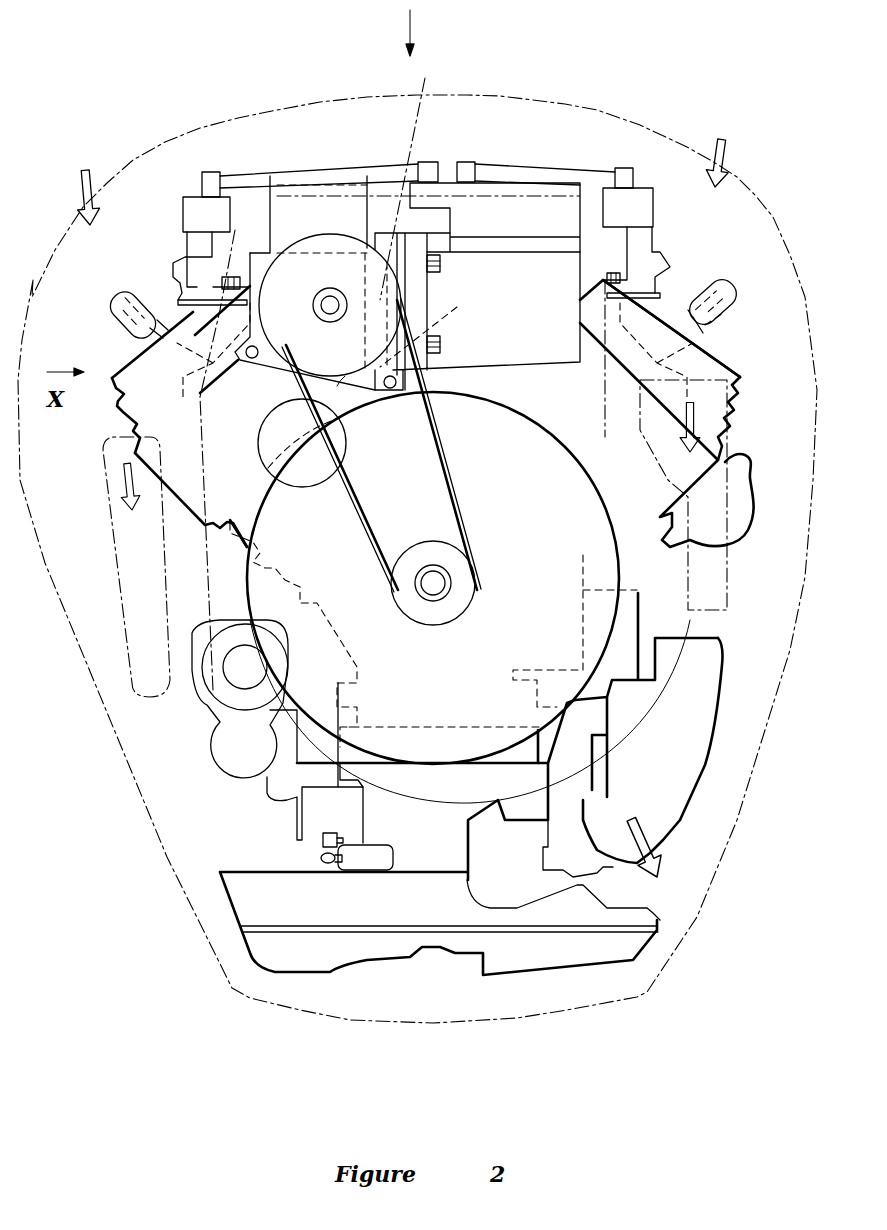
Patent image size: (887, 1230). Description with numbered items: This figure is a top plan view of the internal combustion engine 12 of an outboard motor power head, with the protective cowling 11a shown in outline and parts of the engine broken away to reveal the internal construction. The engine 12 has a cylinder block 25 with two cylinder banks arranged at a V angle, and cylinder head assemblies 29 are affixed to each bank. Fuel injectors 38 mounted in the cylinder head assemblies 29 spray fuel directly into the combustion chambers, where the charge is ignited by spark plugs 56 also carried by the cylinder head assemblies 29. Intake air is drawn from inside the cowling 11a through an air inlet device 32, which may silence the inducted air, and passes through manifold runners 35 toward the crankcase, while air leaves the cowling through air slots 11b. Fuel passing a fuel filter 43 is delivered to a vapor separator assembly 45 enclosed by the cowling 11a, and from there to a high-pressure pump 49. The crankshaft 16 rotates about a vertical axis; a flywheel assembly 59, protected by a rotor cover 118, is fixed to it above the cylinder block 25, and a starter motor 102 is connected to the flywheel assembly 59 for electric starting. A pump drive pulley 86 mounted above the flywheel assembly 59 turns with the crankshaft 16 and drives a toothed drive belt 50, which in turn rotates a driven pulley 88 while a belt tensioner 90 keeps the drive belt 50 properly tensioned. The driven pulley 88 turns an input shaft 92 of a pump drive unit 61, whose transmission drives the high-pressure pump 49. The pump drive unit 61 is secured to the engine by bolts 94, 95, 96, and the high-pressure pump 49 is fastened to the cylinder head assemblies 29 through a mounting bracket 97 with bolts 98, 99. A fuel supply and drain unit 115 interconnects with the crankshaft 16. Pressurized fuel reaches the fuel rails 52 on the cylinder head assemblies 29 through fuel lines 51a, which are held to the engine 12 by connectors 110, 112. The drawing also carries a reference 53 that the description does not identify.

The protective cowling 11a is at (255, 100).
The air slots 11b is at (113, 513).
The internal combustion engine 12 is at (705, 264).
The crankshaft 16 is at (430, 587).
The cylinder block 25 is at (178, 510).
The cylinder head assemblies 29 is at (116, 416).
The air inlet device 32 is at (370, 960).
The manifold runners 35 is at (478, 785).
The fuel injectors 38 is at (171, 257).
The fuel filter 43 is at (747, 543).
The vapor separator assembly 45 is at (700, 790).
The high-pressure pump 49 is at (563, 348).
The drive belt 50 is at (457, 477).
The fuel lines 51a is at (378, 165).
The fuel rails 52 is at (192, 193).
The cylinder head 53 is at (318, 213).
The spark plugs 56 is at (150, 342).
The flywheel assembly 59 is at (375, 750).
The pump drive unit 61 is at (272, 400).
The pump drive pulley 86 is at (463, 593).
The driven pulley 88 is at (353, 353).
The belt tensioner 90 is at (305, 477).
The input shaft 92 is at (330, 305).
The bolt 94 is at (419, 155).
The bolt 95 is at (395, 387).
The bolt 96 is at (252, 358).
The mounting bracket 97 is at (441, 329).
The bolt 98 is at (442, 345).
The bolt 99 is at (447, 263).
The starter motor 102 is at (200, 697).
The connector 110 is at (210, 172).
The connector 112 is at (468, 162).
The fuel supply and drain unit 115 is at (548, 207).
The rotor cover 118 is at (647, 657).